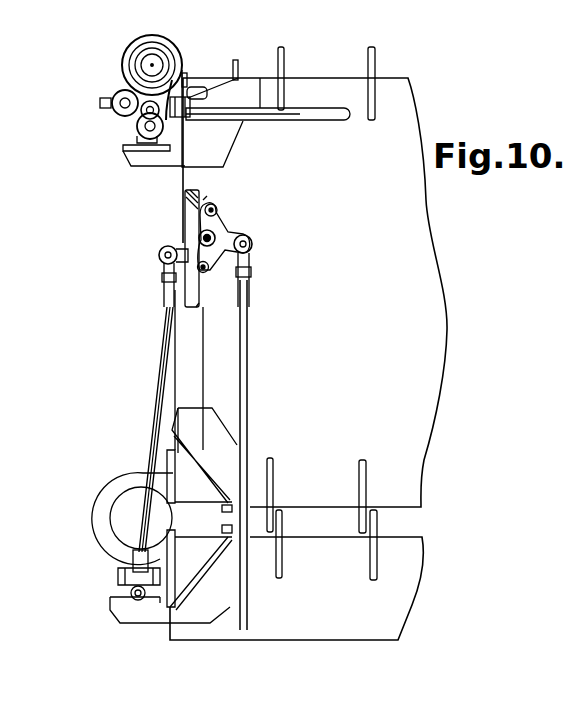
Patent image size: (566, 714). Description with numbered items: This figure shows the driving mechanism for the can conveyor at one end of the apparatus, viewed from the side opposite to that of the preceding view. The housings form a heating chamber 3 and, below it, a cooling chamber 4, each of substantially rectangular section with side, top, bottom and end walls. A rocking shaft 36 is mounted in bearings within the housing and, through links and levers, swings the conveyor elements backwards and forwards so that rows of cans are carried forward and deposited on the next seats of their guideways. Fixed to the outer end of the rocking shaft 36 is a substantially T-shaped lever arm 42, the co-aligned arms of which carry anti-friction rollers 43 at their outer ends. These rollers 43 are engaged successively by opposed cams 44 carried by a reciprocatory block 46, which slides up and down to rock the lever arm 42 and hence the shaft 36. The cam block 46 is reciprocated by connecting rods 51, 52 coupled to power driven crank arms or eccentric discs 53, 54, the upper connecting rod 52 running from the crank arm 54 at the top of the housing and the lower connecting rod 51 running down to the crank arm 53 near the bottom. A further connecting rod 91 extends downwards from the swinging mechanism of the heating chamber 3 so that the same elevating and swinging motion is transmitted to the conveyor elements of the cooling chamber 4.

The heating chamber 3 is at (315, 292).
The cooling chamber 4 is at (296, 588).
The rocking shaft 36 is at (199, 238).
The T-shaped lever arm 42 is at (240, 242).
The anti-friction roller 43 is at (216, 207).
The cam 44 is at (204, 200).
The reciprocatory block 46 is at (190, 218).
The connecting rod 51 is at (162, 340).
The connecting rod 52 is at (304, 120).
The crank arm 53 is at (122, 575).
The crank arm 54 is at (140, 127).
The connecting rod 91 is at (245, 378).